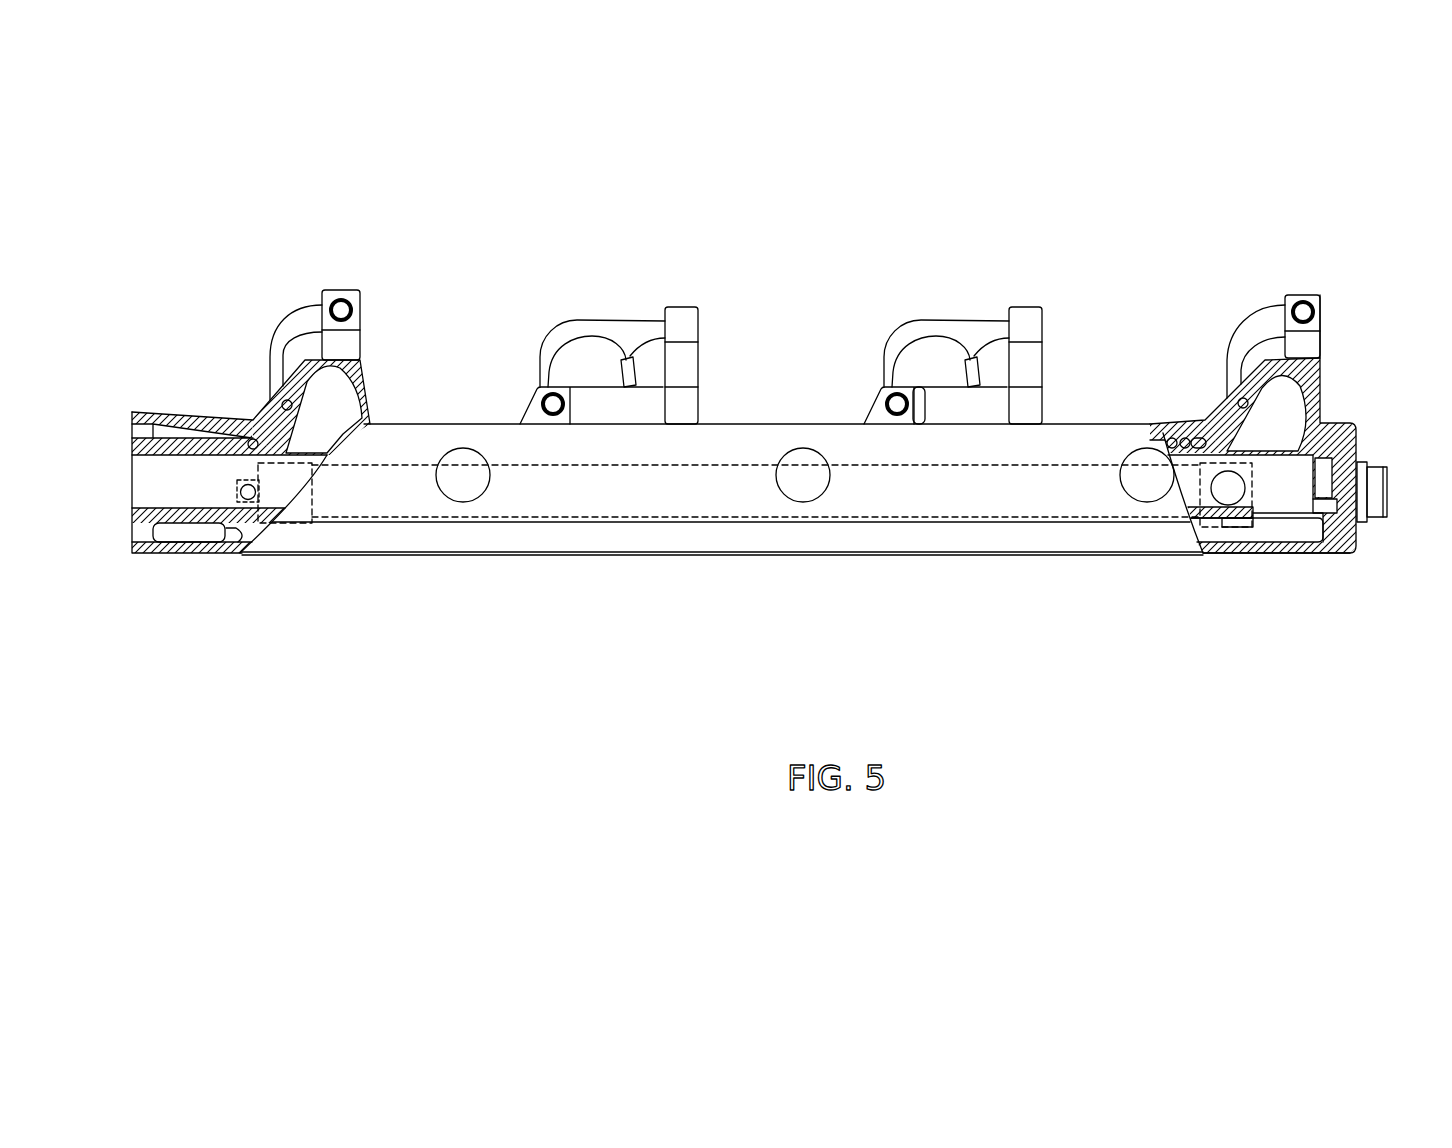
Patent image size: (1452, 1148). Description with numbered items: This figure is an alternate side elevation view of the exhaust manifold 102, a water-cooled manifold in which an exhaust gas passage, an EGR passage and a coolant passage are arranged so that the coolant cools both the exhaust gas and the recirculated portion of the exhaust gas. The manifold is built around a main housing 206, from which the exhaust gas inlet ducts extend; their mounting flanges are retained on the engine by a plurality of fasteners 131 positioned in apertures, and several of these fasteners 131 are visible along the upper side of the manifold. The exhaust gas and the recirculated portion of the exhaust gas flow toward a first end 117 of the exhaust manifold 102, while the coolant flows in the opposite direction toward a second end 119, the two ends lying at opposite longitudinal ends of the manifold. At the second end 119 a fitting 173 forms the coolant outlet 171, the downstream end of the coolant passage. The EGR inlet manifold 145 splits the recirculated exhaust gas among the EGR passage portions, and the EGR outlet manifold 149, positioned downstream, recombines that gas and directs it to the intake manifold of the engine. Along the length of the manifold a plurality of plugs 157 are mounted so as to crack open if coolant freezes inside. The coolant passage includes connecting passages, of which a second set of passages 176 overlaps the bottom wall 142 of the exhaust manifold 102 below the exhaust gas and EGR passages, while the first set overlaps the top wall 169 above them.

The exhaust manifold 102 is at (467, 697).
The first end 117 is at (172, 556).
The second end 119 is at (1342, 553).
The fasteners 131 is at (342, 300).
The bottom wall 142 is at (752, 424).
The EGR inlet manifold 145 is at (1242, 527).
The EGR outlet manifold 149 is at (295, 525).
The plugs 157 is at (458, 488).
The top wall 169 is at (402, 555).
The coolant outlet 171 is at (1393, 515).
The fitting 173 is at (1377, 522).
The second set of passages 176 is at (1183, 437).
The main housing 206 is at (1357, 411).